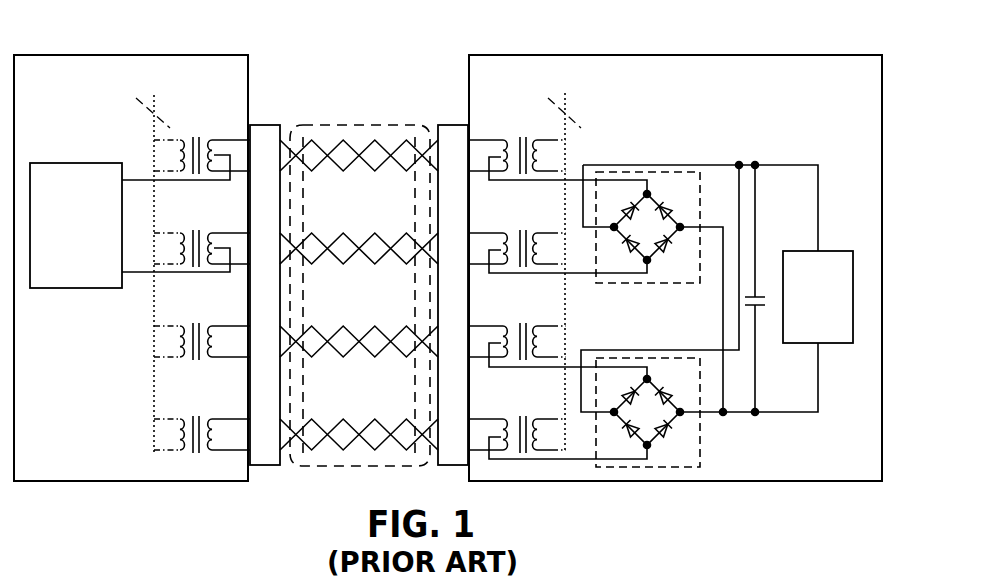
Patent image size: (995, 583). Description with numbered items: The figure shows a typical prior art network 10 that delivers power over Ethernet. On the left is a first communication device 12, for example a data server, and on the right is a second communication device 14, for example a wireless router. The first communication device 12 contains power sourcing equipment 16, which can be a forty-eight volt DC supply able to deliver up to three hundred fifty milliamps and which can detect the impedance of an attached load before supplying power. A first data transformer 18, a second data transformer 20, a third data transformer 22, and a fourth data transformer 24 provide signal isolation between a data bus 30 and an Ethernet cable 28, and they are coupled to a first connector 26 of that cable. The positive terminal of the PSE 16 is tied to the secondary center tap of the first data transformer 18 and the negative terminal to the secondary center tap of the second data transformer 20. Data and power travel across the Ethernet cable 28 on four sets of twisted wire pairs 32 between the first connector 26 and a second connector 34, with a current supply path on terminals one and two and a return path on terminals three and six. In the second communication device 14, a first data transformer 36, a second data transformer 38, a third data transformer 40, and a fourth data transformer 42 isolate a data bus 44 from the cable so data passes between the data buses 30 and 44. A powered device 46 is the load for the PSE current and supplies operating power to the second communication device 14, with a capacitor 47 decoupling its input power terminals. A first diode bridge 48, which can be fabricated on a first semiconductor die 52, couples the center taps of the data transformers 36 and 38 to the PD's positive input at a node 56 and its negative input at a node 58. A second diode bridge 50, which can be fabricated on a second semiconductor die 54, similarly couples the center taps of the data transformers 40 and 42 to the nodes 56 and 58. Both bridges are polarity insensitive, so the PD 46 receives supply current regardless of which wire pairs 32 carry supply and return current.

The network 10 is at (84, 34).
The first communication device 12 is at (55, 86).
The second communication device 14 is at (866, 86).
The power sourcing equipment 16 is at (69, 163).
The first data transformer 18 is at (245, 141).
The second data transformer 20 is at (245, 233).
The third data transformer 22 is at (245, 326).
The fourth data transformer 24 is at (245, 418).
The first connector 26 is at (265, 125).
The Ethernet cable 28 is at (356, 125).
The data bus 30 is at (150, 130).
The wire pairs 32 is at (393, 168).
The second connector 34 is at (460, 125).
The first data transformer 36 is at (485, 140).
The second data transformer 38 is at (485, 233).
The third data transformer 40 is at (480, 326).
The fourth data transformer 42 is at (480, 419).
The data bus 44 is at (572, 122).
The powered device 46 is at (821, 251).
The capacitor 47 is at (764, 272).
The first diode bridge 48 is at (673, 258).
The second diode bridge 50 is at (675, 378).
The first semiconductor die 52 is at (659, 172).
The second semiconductor die 54 is at (700, 447).
The node 56 is at (762, 152).
The node 58 is at (763, 428).